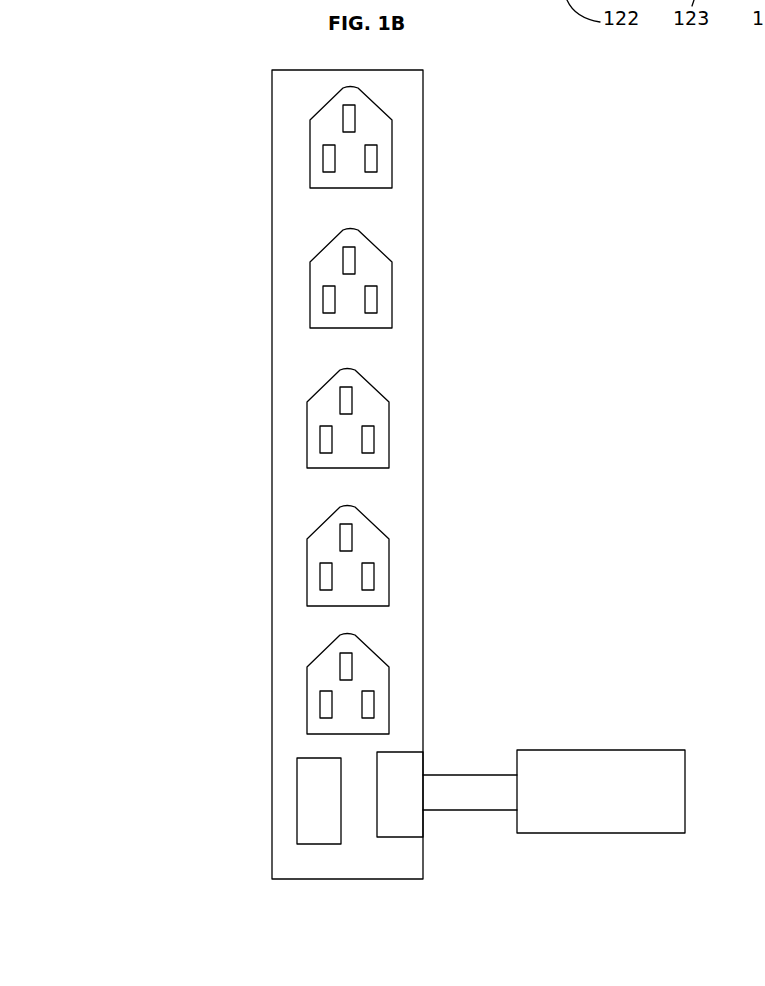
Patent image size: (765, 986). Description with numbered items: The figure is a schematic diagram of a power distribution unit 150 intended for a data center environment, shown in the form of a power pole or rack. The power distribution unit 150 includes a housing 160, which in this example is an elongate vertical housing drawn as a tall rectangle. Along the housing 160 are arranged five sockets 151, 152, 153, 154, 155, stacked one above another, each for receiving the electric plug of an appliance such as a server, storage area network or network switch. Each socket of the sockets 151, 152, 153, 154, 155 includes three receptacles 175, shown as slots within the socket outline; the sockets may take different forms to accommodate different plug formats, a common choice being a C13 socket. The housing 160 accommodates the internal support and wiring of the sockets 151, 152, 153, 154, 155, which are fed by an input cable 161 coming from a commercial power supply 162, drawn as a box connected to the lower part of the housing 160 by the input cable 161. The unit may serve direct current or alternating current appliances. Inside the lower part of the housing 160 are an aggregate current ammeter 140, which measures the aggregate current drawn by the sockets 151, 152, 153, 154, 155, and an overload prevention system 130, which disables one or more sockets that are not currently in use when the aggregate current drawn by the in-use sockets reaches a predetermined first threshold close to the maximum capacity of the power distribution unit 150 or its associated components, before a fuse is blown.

The power distribution unit 150 is at (133, 132).
The housing 160 is at (423, 268).
The socket 151 is at (310, 161).
The socket 152 is at (310, 298).
The socket 153 is at (307, 438).
The socket 154 is at (307, 573).
The socket 155 is at (307, 700).
The receptacle 175 is at (351, 119).
The overload prevention system 130 is at (297, 790).
The aggregate current ammeter 140 is at (423, 757).
The input cable 161 is at (480, 773).
The power supply 162 is at (595, 750).